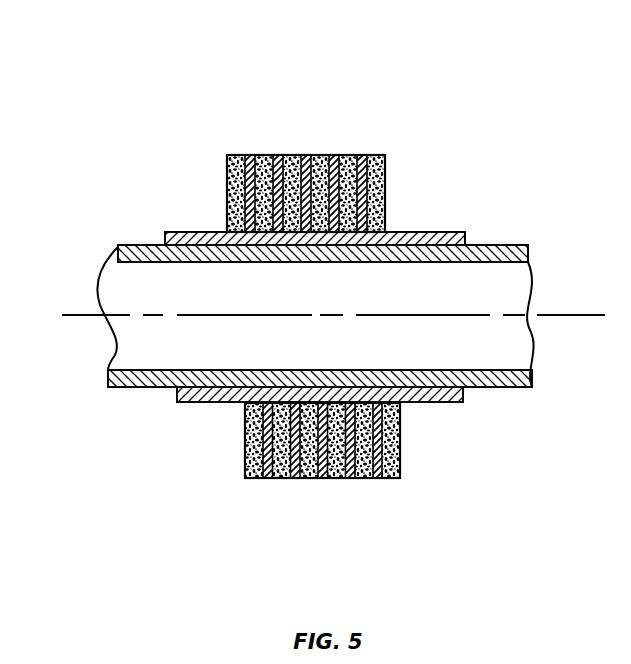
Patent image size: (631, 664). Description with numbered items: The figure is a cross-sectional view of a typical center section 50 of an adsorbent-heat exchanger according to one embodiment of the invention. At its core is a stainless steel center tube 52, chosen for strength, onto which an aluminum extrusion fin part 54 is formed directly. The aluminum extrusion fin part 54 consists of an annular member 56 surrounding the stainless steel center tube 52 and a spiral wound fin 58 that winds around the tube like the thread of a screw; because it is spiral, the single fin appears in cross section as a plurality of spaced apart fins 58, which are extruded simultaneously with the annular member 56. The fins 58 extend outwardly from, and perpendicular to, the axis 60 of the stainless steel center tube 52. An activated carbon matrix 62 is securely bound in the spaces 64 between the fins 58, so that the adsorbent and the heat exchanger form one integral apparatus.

The center section 50 is at (338, 101).
The stainless steel center tube 52 is at (118, 247).
The aluminum extrusion fin part 54 is at (385, 262).
The annular member 56 is at (163, 234).
The spiral wound fin 58 is at (330, 315).
The axis 60 is at (150, 318).
The activated carbon matrix 62 is at (290, 153).
The spaces 64 is at (264, 141).